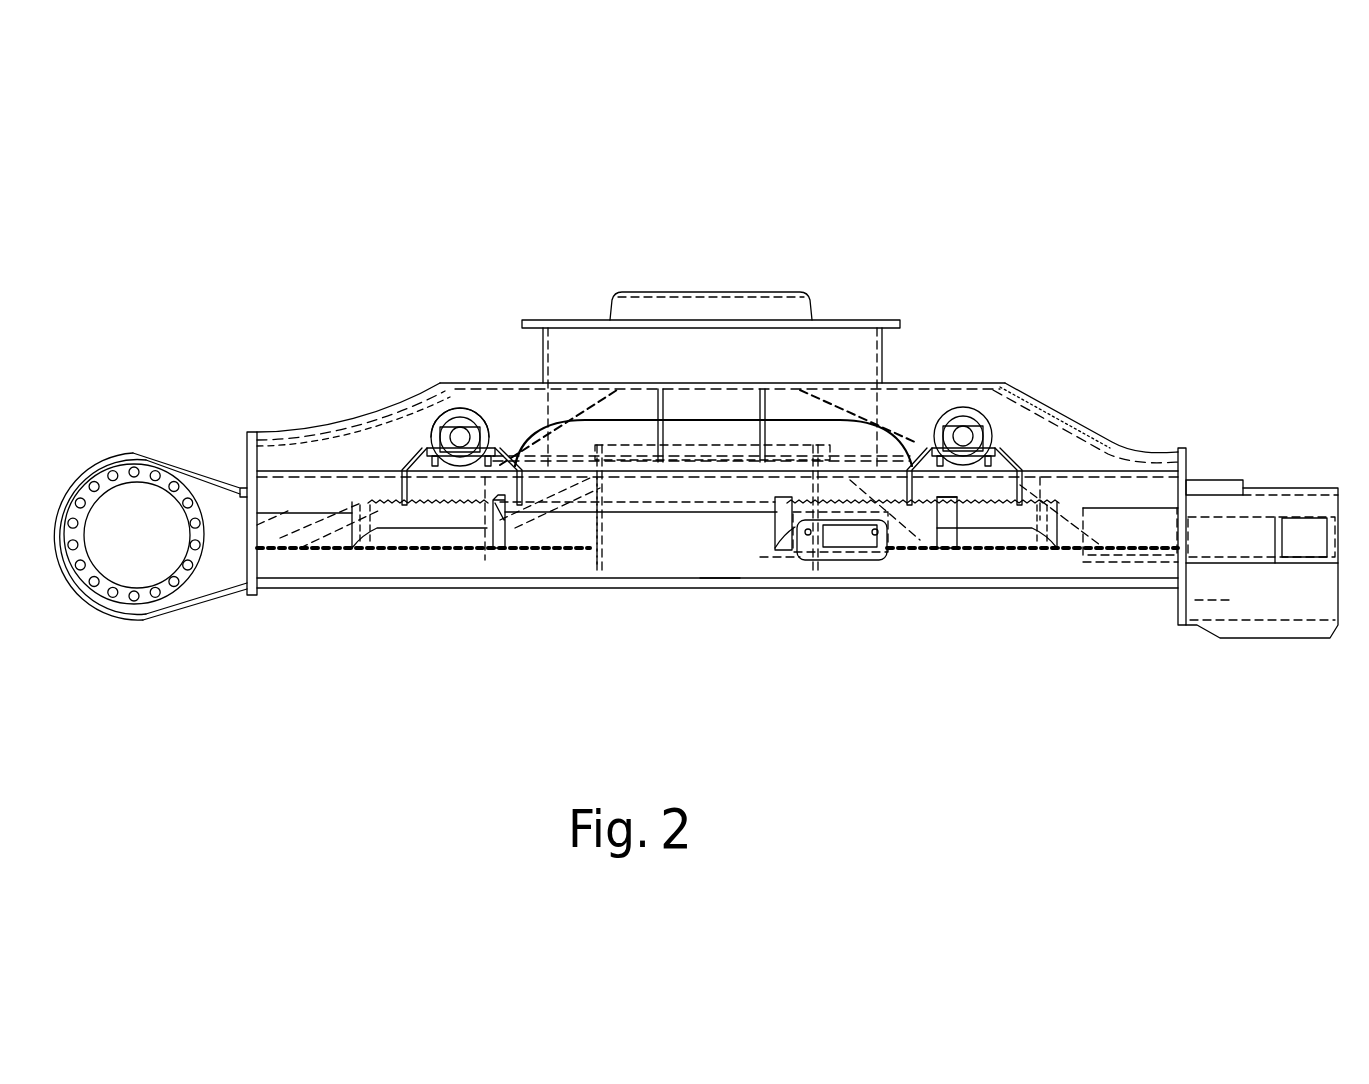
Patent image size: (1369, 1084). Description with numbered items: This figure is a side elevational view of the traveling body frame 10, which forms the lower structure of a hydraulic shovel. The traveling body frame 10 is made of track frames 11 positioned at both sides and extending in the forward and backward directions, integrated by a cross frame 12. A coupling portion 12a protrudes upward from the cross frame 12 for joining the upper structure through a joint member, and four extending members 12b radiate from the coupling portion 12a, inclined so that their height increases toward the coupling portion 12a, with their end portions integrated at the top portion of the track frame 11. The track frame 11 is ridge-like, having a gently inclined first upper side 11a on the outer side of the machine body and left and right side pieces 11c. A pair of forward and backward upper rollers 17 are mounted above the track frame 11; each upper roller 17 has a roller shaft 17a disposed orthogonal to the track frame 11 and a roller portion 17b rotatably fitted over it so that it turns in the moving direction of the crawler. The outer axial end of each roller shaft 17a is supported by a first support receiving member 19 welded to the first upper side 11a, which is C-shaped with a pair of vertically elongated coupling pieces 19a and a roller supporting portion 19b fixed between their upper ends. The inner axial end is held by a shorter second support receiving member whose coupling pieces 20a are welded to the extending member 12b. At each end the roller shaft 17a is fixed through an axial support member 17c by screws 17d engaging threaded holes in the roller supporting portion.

The traveling body frame 10 is at (1068, 197).
The track frame 11 is at (1060, 471).
The first upper side 11a is at (636, 487).
The side piece 11c is at (716, 552).
The cross frame 12 is at (781, 354).
The coupling portion 12a is at (566, 320).
The extending member 12b is at (363, 450).
The upper roller 17 is at (431, 430).
The roller shaft 17a is at (456, 425).
The roller portion 17b is at (470, 425).
The axial support member 17c is at (414, 391).
The screw 17d is at (448, 428).
The first support receiving member 19 is at (1086, 455).
The coupling piece 19a is at (505, 483).
The roller supporting portion 19b is at (1015, 452).
The coupling piece 20a is at (431, 472).